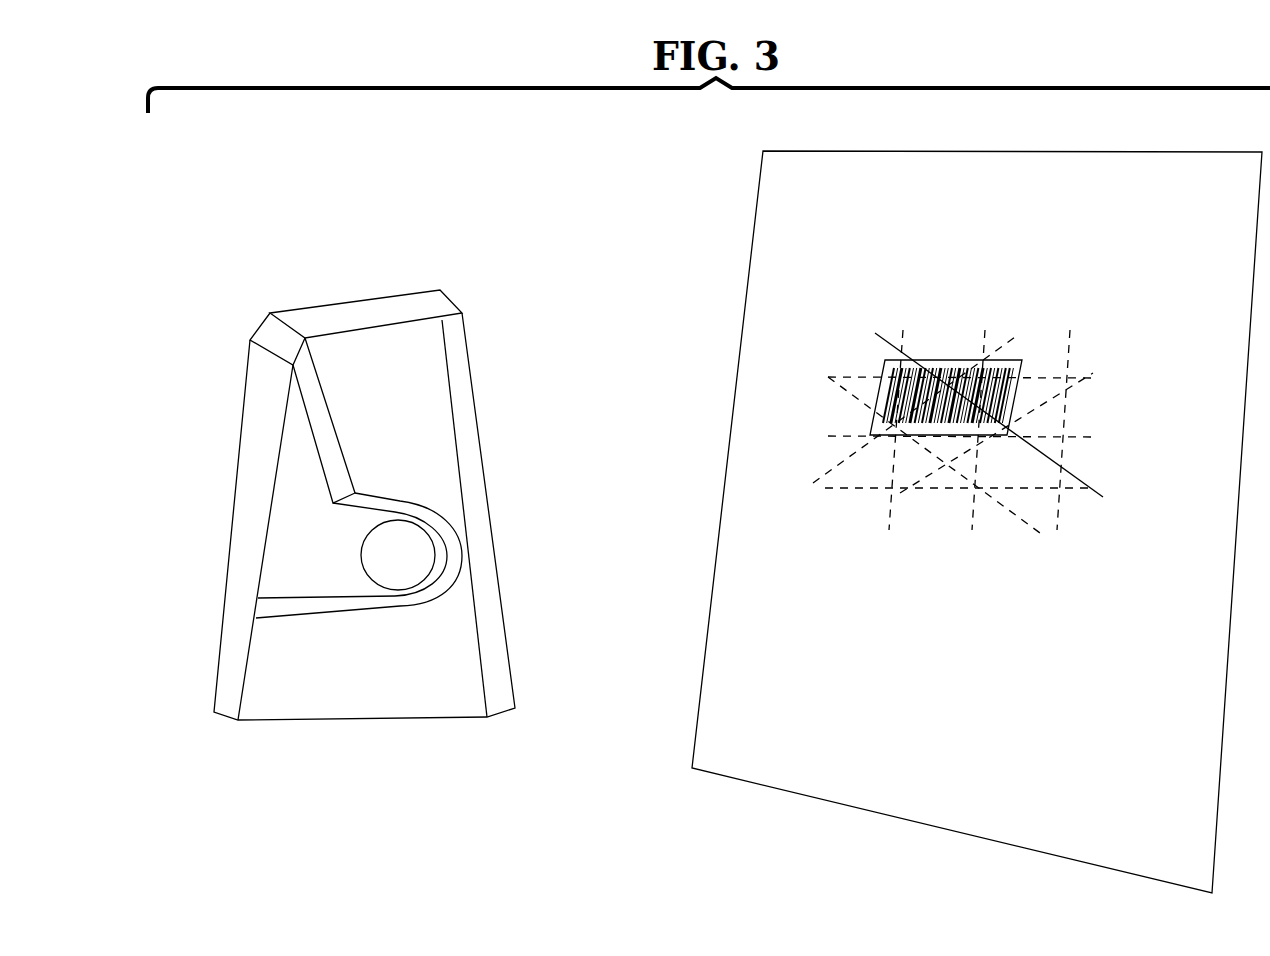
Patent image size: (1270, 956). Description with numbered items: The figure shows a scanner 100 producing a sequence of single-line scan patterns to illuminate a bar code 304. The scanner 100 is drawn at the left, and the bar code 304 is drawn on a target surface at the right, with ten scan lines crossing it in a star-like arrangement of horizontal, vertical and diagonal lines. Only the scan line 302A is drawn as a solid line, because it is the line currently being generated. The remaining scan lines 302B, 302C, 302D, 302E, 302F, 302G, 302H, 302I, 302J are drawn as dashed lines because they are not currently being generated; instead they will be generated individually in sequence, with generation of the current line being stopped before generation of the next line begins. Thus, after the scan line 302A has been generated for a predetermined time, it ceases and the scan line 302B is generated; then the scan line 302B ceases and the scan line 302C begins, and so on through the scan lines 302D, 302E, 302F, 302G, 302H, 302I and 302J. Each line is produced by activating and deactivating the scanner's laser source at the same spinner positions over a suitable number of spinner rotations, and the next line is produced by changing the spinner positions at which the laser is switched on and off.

The scanner 100 is at (277, 206).
The bar code 304 is at (938, 360).
The scan line 302A is at (875, 333).
The scan line 302B is at (888, 523).
The scan line 302C is at (970, 523).
The scan line 302D is at (1072, 337).
The scan line 302E is at (1093, 370).
The scan line 302F is at (850, 375).
The scan line 302G is at (1090, 437).
The scan line 302H is at (1072, 490).
The scan line 302I is at (830, 473).
The scan line 302J is at (1042, 537).